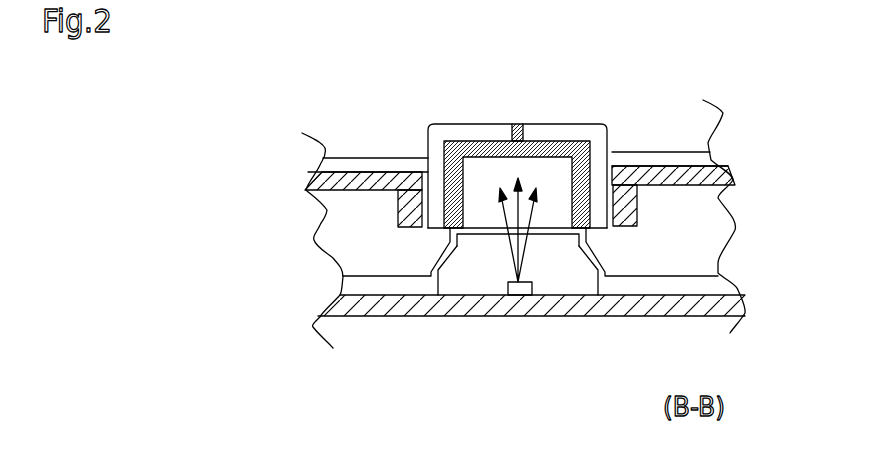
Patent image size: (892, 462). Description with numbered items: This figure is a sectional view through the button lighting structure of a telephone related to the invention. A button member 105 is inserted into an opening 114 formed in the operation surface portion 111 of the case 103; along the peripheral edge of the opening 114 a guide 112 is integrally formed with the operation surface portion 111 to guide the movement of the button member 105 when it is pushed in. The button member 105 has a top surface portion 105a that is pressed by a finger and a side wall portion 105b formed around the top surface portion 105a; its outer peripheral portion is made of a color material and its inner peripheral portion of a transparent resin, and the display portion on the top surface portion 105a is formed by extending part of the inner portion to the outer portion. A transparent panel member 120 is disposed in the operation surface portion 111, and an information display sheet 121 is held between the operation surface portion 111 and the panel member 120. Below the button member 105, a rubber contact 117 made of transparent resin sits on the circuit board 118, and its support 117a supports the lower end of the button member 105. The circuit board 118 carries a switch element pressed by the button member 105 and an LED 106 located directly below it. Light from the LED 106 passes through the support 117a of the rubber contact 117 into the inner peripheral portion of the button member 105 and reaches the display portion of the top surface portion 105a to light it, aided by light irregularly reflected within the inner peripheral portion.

The case 103 is at (358, 172).
The transparent panel member 120 is at (393, 158).
The top surface portion 105a is at (485, 124).
The button member 105 is at (556, 124).
The opening 114 is at (609, 143).
The operation surface portion 111 is at (683, 167).
The information display sheet 121 is at (709, 150).
The guide 112 is at (405, 212).
The rubber contact 117 is at (368, 286).
The side wall portion 105b is at (448, 235).
The LED 106 is at (510, 281).
The support 117a is at (481, 236).
The circuit board 118 is at (583, 300).